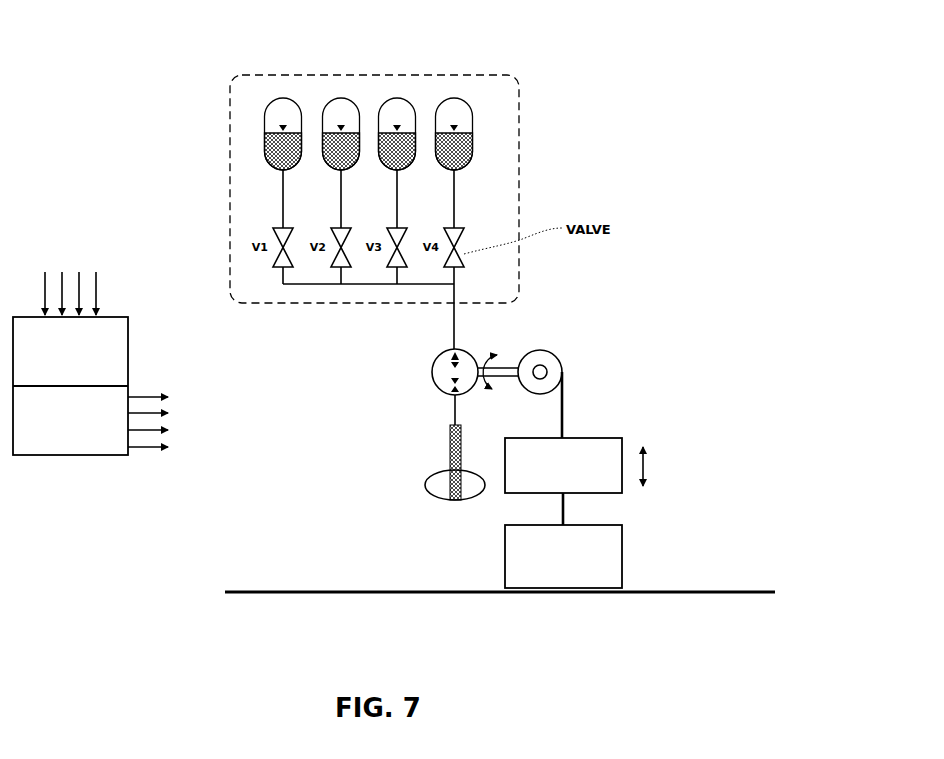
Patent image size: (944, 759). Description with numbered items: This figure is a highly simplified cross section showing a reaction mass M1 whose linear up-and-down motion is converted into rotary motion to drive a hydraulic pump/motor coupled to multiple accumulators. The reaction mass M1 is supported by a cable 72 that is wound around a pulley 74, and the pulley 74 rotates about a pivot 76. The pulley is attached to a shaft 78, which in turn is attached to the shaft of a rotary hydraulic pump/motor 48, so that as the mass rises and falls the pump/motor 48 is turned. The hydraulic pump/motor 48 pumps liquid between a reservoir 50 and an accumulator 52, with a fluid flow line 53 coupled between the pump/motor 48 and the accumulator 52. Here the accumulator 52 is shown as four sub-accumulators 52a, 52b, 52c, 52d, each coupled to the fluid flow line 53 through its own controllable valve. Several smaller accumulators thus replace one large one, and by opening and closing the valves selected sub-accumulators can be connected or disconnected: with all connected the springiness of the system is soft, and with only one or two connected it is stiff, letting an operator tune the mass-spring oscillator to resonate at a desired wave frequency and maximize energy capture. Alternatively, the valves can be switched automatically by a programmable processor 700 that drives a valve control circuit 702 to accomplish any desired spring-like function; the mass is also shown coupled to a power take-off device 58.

The accumulator 52 is at (519, 128).
The sub-accumulator 52a is at (454, 118).
The sub-accumulator 52b is at (397, 115).
The sub-accumulator 52c is at (341, 113).
The sub-accumulator 52d is at (283, 120).
The fluid flow line 53 is at (450, 318).
The rotary hydraulic pump/motor 48 is at (440, 368).
The shaft 78 is at (498, 358).
The pulley 74 is at (552, 353).
The pivot 76 is at (563, 380).
The cable 72 is at (590, 437).
The reaction mass M1 is at (640, 445).
The power take-off device 58 is at (612, 560).
The reservoir 50 is at (440, 487).
The processor 700 is at (113, 333).
The valve control circuit 702 is at (113, 448).